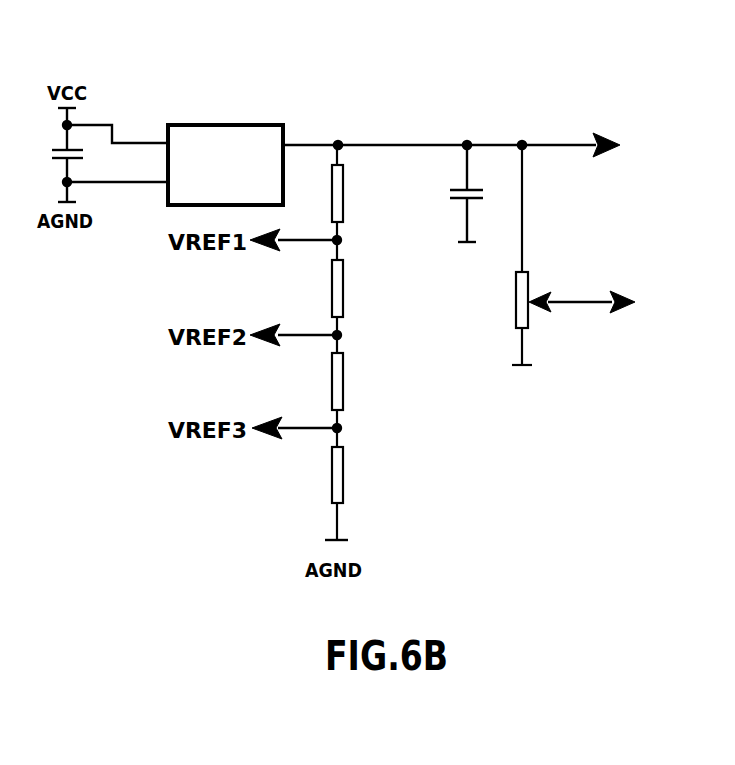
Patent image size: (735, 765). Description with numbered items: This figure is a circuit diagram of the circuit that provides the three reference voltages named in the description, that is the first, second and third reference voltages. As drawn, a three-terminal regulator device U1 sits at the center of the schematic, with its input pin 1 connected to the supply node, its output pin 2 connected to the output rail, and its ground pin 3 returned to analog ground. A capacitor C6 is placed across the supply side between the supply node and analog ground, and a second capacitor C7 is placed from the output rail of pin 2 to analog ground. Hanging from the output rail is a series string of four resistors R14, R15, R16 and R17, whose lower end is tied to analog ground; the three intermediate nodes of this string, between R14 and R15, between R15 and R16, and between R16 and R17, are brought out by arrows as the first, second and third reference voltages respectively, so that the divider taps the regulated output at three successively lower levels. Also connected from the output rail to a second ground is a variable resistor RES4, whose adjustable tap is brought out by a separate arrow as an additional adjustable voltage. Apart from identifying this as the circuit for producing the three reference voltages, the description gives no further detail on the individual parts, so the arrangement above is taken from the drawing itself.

The voltage regulator U1 input pin 1 (VIN) 1 is at (117, 137).
The voltage regulator U1 output pin 2 (VOUT) 2 is at (490, 144).
The voltage regulator U1 ground pin 3 (GND) 3 is at (117, 175).
The voltage regulator U1 is at (225, 143).
The input capacitor C6 is at (81, 153).
The output capacitor C7 is at (472, 207).
The voltage divider resistor R14 is at (365, 192).
The voltage divider resistor R15 is at (365, 287).
The voltage divider resistor R16 is at (365, 381).
The voltage divider resistor R17 is at (365, 484).
The variable resistor (potentiometer) RES4 is at (584, 268).